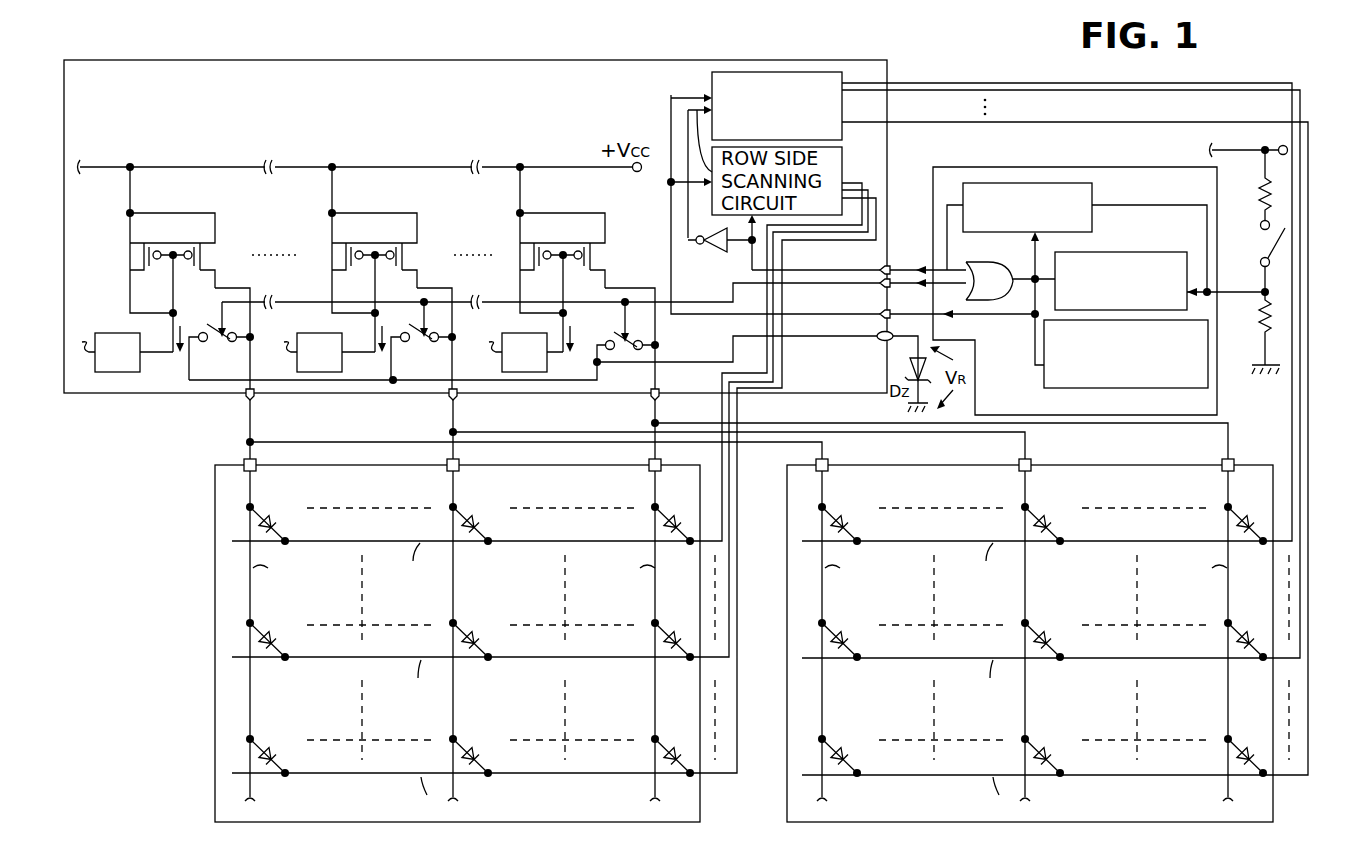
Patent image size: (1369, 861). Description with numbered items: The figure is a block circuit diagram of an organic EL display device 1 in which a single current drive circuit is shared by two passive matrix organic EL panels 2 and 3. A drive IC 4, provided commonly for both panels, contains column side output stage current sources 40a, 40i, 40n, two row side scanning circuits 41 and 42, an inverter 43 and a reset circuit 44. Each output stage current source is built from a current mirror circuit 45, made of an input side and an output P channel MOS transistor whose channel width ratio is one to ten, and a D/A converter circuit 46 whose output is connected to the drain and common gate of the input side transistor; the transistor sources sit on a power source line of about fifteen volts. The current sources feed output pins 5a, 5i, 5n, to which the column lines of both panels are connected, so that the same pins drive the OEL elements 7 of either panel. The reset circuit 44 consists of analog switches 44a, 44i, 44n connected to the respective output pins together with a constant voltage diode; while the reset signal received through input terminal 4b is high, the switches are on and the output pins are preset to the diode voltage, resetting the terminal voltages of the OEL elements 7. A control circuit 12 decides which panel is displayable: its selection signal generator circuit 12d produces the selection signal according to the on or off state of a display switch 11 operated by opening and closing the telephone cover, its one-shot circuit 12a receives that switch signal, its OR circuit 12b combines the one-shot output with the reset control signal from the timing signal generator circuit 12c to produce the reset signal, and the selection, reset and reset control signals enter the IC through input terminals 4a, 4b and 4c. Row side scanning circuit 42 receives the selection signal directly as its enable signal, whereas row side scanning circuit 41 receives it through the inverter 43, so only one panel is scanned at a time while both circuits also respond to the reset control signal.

The organic EL display device 1 is at (1000, 37).
The organic EL panel 2 is at (913, 822).
The organic EL panel 3 is at (358, 822).
The drive IC 4 is at (478, 62).
The input terminal 4a is at (890, 263).
The input terminal 4b is at (890, 290).
The input terminal 4c is at (892, 318).
The output pin 5a is at (247, 396).
The output pin 5i is at (450, 396).
The output pin 5n is at (652, 396).
The OEL element 7 is at (1262, 747).
The display switch 11 is at (1290, 236).
The control circuit 12 is at (1217, 395).
The one-shot circuit 12a is at (1142, 252).
The OR circuit 12b is at (973, 267).
The timing signal generator circuit 12c is at (1240, 358).
The selection signal generator circuit 12d is at (1052, 182).
The column side output stage current source 40a is at (145, 191).
The column side output stage current source 40i is at (347, 191).
The column side output stage current source 40n is at (540, 191).
The row side scanning circuit 41 is at (763, 72).
The row side scanning circuit 42 is at (673, 93).
The inverter 43 is at (709, 253).
The reset circuit 44 is at (676, 351).
The analog switch 44a is at (221, 341).
The analog switch 44i is at (423, 341).
The analog switch 44n is at (640, 331).
The current mirror circuit 45 is at (147, 221).
The D/A converter circuit 46 is at (120, 372).